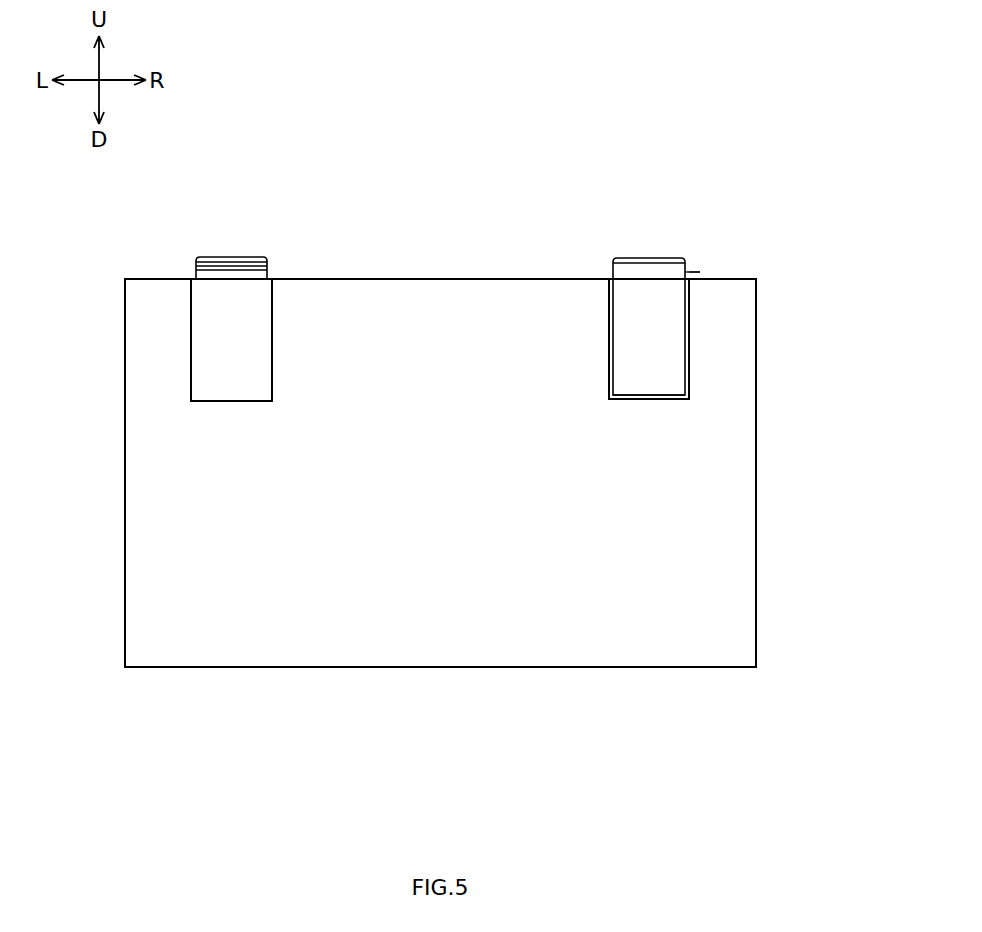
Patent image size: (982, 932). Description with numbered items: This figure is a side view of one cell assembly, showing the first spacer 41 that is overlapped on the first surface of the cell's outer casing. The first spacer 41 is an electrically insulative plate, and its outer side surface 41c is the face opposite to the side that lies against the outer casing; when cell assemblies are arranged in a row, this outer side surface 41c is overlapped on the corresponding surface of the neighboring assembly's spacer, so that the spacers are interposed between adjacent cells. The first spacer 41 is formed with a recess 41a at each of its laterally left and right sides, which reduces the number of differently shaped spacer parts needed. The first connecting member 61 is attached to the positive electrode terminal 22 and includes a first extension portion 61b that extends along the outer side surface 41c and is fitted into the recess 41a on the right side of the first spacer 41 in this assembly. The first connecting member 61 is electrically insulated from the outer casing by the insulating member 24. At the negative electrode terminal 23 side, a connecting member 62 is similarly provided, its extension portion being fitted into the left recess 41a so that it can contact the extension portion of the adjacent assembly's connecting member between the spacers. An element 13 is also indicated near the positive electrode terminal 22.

The first spacer 41 is at (758, 388).
The recess 41a is at (243, 401).
The outer side surface 41c is at (468, 628).
The second connecting member 62 is at (266, 266).
The negative electrode terminal 23 is at (247, 256).
The insulating member 24 is at (194, 272).
The first connecting member 61 is at (611, 272).
The first extension portion 61b is at (654, 385).
The positive electrode terminal 22 is at (668, 258).
The electrode terminal region 13 is at (689, 271).